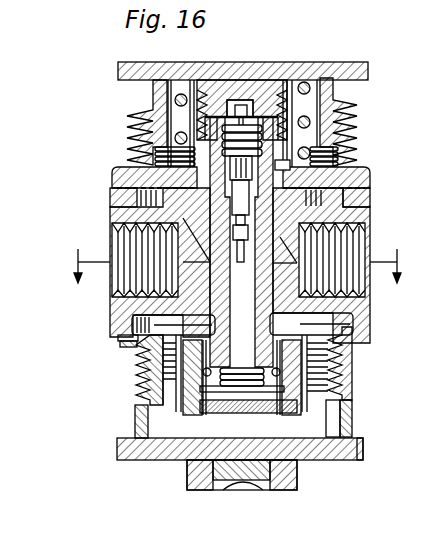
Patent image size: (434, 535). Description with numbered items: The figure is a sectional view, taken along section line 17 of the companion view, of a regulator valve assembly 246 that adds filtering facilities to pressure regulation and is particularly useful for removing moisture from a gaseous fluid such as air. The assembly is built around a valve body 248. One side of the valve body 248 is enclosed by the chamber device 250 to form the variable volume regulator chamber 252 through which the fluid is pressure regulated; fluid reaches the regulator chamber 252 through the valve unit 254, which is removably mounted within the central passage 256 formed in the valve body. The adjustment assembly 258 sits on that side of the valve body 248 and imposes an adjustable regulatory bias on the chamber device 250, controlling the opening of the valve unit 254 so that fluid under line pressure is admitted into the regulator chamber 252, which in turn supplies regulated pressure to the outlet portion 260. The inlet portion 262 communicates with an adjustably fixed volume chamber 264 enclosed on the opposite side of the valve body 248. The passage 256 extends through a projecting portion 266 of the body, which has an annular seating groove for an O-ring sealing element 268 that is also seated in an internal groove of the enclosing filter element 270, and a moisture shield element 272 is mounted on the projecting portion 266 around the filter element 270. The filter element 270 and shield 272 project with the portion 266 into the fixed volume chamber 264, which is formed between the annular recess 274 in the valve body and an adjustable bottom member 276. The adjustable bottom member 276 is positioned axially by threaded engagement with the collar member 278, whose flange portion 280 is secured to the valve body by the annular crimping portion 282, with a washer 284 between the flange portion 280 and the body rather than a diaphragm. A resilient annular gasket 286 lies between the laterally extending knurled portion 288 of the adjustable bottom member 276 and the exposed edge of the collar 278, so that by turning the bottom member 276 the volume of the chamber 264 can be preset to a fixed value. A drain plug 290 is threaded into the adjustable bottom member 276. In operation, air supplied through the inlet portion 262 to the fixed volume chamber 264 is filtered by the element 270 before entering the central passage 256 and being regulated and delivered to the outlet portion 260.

The section line 17- 17 is at (241, 257).
The regulator valve assembly 246 is at (115, 137).
The valve body 248 is at (110, 212).
The chamber device 250 is at (248, 90).
The variable volume regulator chamber 252 is at (333, 194).
The valve unit 254 is at (338, 150).
The central passage 256 is at (233, 280).
The adjustment assembly 258 is at (346, 62).
The outlet portion 260 is at (355, 278).
The inlet portion 262 is at (127, 272).
The fixed volume chamber 264 is at (338, 327).
The projecting portion 266 is at (270, 396).
The O-ring sealing element 268 is at (193, 400).
The filter element 270 is at (299, 457).
The moisture shield element 272 is at (346, 409).
The annular recess 274 is at (140, 352).
The adjustable bottom member 276 is at (144, 458).
The collar member 278 is at (350, 375).
The flange portion 280 is at (126, 341).
The annular crimping portion 282 is at (128, 347).
The washer 284 is at (135, 332).
The resilient annular gasket 286 is at (135, 424).
The knurled portion 288 is at (363, 450).
The drain plug 290 is at (206, 480).